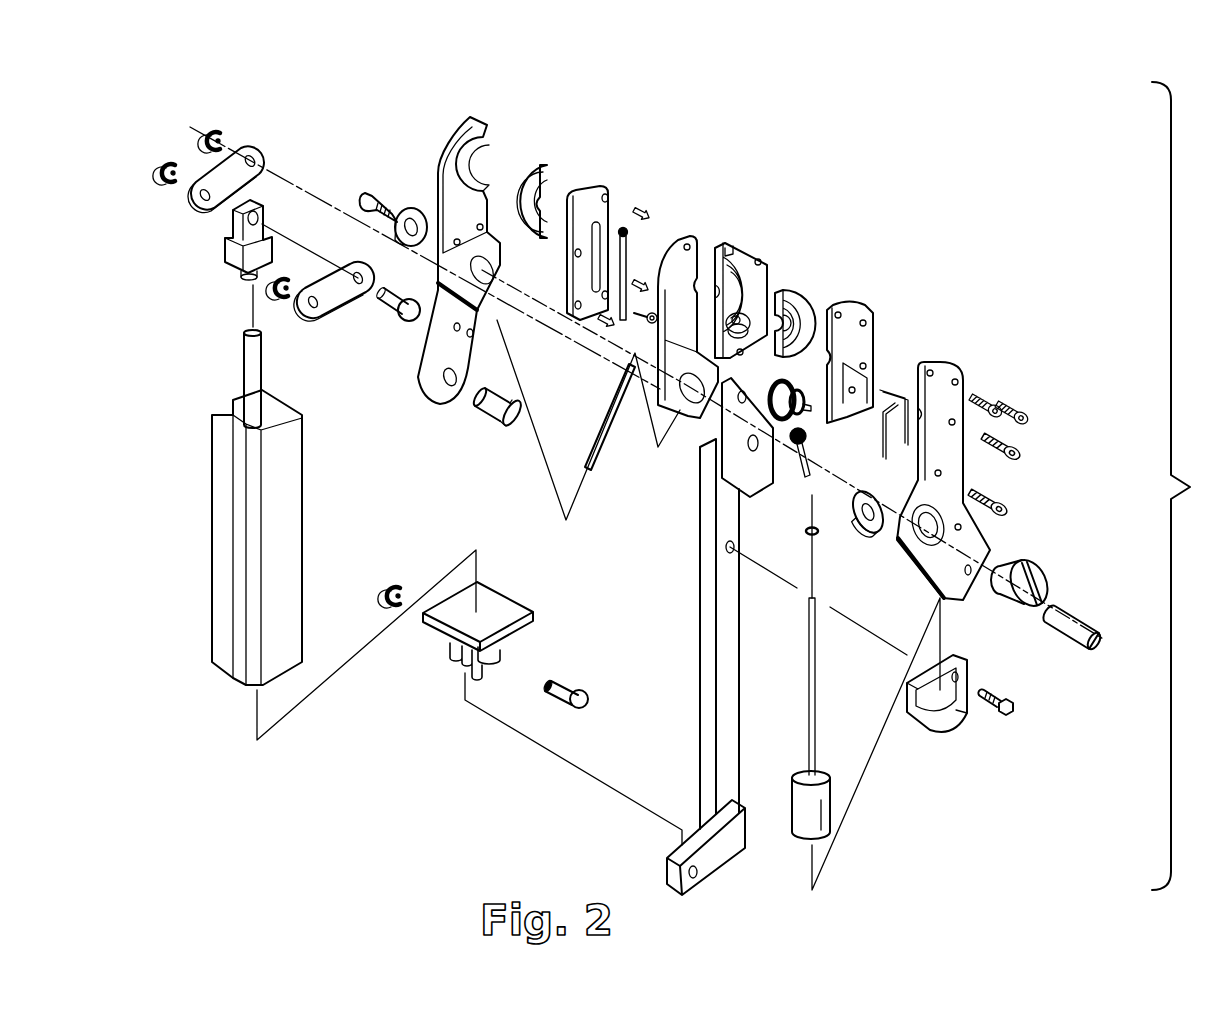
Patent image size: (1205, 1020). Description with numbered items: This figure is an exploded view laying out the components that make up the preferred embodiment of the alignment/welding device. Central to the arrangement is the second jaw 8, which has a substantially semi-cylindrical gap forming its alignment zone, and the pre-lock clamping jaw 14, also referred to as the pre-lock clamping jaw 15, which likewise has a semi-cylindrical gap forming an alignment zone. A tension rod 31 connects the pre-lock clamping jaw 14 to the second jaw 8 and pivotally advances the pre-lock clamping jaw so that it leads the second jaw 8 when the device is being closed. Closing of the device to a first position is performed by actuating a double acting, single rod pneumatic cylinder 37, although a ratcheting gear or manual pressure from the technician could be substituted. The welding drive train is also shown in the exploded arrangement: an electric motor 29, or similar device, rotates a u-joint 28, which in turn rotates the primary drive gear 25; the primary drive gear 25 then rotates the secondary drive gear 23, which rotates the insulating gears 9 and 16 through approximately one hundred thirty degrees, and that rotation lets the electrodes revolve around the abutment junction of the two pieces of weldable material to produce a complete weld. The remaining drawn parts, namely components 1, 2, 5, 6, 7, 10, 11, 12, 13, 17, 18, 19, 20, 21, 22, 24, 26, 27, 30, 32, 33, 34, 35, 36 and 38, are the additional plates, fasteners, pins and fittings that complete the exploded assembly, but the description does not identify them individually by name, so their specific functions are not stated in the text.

The retaining ring 1 is at (165, 162).
The retaining ring 2 is at (211, 134).
The link plate 5 is at (191, 200).
The screw 6 is at (364, 196).
The washer 7 is at (410, 210).
The second jaw 8 is at (452, 147).
The insulating gear 9 is at (550, 183).
The guide plate 10 is at (606, 208).
The pin 11 is at (629, 235).
The pin 12 is at (644, 211).
The screw 13 is at (642, 319).
The pre-lock clamping jaw 14 is at (690, 253).
The pre-lock clamping jaw 15 is at (754, 250).
The insulating gear 16 is at (803, 297).
The mounting plate 17 is at (855, 320).
The bracket plate 18 is at (945, 375).
The screws 19 is at (1012, 402).
The screw 20 is at (1015, 452).
The slotted cap 21 is at (1022, 560).
The pivot pin 22 is at (1070, 622).
The secondary drive gear 23 is at (800, 412).
The washer 24 is at (880, 533).
The primary drive gear 25 is at (800, 465).
The bolt 26 is at (1000, 720).
The bracket 27 is at (935, 728).
The u-joint 28 is at (818, 532).
The electric motor 29 is at (800, 830).
The frame 30 is at (705, 605).
The tension rod 31 is at (600, 443).
The pin 32 is at (572, 682).
The pin 33 is at (485, 412).
The base plate 34 is at (495, 602).
The pin 35 is at (389, 312).
The retaining ring 36 is at (400, 588).
The pneumatic cylinder 37 is at (212, 552).
The block 38 is at (226, 257).